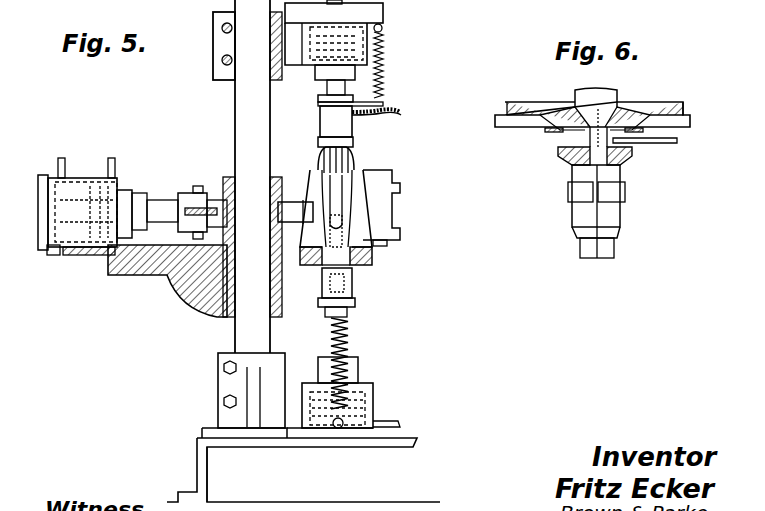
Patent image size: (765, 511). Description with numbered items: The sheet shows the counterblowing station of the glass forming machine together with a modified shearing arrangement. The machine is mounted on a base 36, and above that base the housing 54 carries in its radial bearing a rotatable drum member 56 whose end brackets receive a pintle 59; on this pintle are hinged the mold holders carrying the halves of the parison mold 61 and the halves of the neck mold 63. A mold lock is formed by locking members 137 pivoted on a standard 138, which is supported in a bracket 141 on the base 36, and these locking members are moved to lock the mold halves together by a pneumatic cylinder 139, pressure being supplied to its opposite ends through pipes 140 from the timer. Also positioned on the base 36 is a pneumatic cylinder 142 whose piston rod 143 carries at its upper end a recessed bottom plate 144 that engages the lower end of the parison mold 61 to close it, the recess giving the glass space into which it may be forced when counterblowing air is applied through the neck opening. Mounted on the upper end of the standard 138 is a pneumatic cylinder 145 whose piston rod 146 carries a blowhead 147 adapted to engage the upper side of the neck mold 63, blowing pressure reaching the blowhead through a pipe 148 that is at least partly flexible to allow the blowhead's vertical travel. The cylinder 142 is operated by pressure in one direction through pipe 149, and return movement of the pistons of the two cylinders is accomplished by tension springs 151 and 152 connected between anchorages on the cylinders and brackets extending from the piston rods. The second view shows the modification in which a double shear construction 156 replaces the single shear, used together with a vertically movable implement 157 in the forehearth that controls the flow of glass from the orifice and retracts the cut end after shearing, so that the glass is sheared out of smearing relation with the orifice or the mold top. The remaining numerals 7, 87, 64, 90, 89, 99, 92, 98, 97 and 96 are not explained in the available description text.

In FIG. 5, the standard 138 is at (240, 117).
In FIG. 5, the pneumatic cylinder 145 is at (305, 43).
In FIG. 5, the tension spring 152 is at (386, 47).
In FIG. 5, the piston rod 146 is at (332, 89).
In FIG. 5, the pipe 148 is at (393, 107).
In FIG. 5, the blowhead 147 is at (323, 117).
In FIG. 5, the locking members 137 is at (290, 205).
In FIG. 5, the neck mold 63 is at (356, 152).
In FIG. 5, the pintle 59 is at (385, 237).
In FIG. 5, the parison mold 61 is at (360, 180).
In FIG. 6, the parison mold 61 is at (612, 215).
In FIG. 5, the recessed bottom plate 144 is at (350, 287).
In FIG. 5, the piston rod 143 is at (345, 322).
In FIG. 5, the tension spring 151 is at (352, 371).
In FIG. 5, the pneumatic cylinder 142 is at (372, 394).
In FIG. 5, the pipe 149 is at (388, 421).
In FIG. 5, the bracket 141 is at (228, 383).
In FIG. 5, the base 36 is at (200, 460).
In FIG. 5, the pneumatic cylinder 139 is at (84, 168).
In FIG. 5, the pipes 140 is at (60, 160).
In FIG. 6, the implement 157 is at (600, 95).
In FIG. 6, the plate 7 is at (592, 140).
In FIG. 6, the double shear construction 156 is at (646, 144).
In FIG. 5, the part 87 is at (405, 8).
In FIG. 5, the drum member 56 is at (424, 3).
In FIG. 5, the part 64 is at (484, 25).
In FIG. 5, the part 90 is at (499, 21).
In FIG. 5, the part 89 is at (485, 20).
In FIG. 5, the housing 54 is at (533, 0).
In FIG. 5, the part 99 is at (549, 15).
In FIG. 5, the part 92 is at (565, 0).
In FIG. 5, the part 98 is at (594, 0).
In FIG. 5, the part 97 is at (636, 0).
In FIG. 5, the part 96 is at (704, 0).